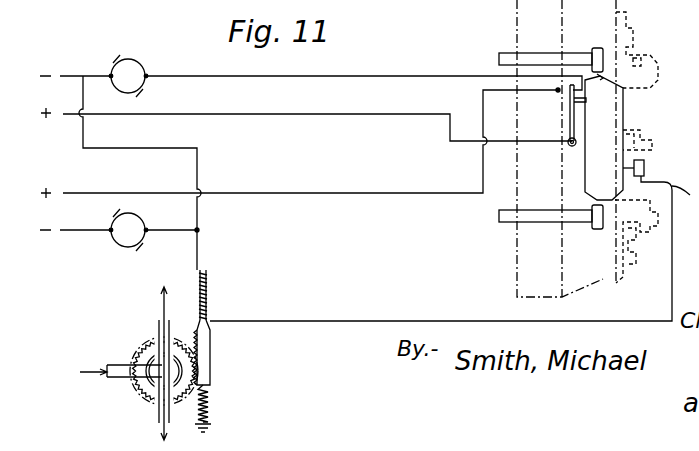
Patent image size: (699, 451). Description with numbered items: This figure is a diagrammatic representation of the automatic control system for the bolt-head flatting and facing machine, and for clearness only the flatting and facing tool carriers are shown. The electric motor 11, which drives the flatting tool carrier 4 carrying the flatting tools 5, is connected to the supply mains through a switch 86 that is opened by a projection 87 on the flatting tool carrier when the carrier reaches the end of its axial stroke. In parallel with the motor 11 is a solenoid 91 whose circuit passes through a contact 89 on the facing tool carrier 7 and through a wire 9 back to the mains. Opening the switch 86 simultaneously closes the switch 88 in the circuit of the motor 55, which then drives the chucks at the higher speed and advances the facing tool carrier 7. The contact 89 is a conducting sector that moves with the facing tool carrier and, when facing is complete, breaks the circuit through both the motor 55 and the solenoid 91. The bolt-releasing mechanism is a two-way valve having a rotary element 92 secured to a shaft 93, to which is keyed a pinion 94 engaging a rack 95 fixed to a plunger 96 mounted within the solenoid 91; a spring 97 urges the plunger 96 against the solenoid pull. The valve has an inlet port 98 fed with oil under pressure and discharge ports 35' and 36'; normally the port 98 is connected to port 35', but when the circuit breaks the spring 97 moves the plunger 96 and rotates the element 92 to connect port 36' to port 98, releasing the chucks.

The flatting-tool carrier 4 is at (622, 114).
The flatting tools 5 is at (603, 78).
The facing tool carrier 7 is at (605, 286).
The wire 9 is at (685, 192).
The electric motor 11 is at (130, 68).
The motor 55 is at (122, 240).
The discharge port 35' is at (177, 363).
The discharge port 36' is at (140, 424).
The switch 86 is at (573, 100).
The projection 87 is at (569, 112).
The switch 88 is at (557, 87).
The contact 89 is at (645, 168).
The solenoid 91 is at (199, 277).
The rotary element 92 is at (152, 379).
The shaft 93 is at (152, 340).
The pinion 94 is at (174, 414).
The rack 95 is at (208, 353).
The plunger 96 is at (208, 276).
The spring 97 is at (206, 408).
The inlet port 98 is at (112, 368).